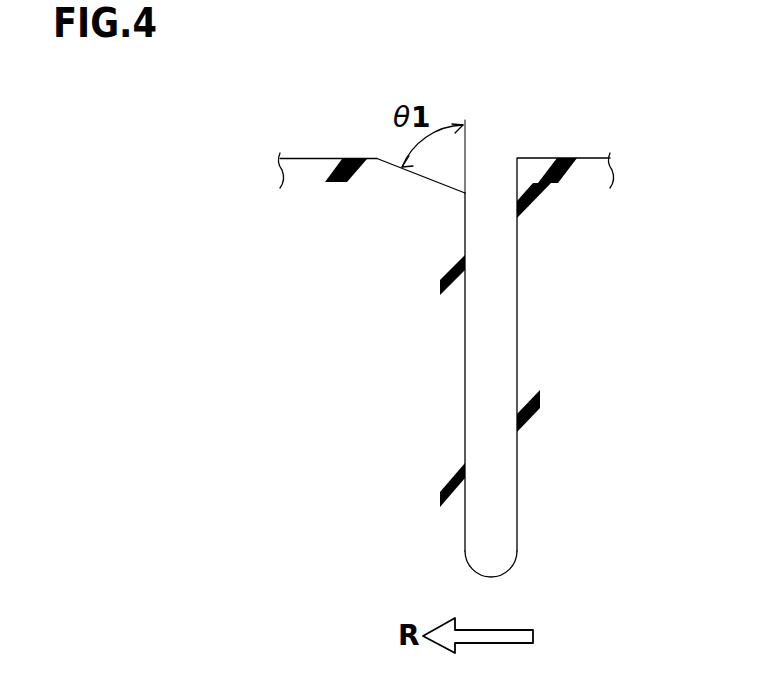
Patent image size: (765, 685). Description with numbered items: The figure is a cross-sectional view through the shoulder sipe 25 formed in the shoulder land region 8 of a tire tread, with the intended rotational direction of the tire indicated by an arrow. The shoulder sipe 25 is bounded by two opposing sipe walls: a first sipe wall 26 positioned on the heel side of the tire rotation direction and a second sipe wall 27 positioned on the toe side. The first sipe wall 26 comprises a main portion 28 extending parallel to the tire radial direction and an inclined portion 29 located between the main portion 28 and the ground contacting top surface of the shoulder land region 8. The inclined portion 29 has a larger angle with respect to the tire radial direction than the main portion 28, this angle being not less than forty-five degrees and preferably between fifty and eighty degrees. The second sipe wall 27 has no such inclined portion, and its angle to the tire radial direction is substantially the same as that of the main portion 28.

The shoulder land region 8 is at (327, 156).
The shoulder sipe 25 is at (489, 399).
The first sipe wall 26 is at (327, 252).
The second sipe wall 27 is at (516, 238).
The main portion 28 is at (463, 316).
The inclined portion 29 is at (423, 176).